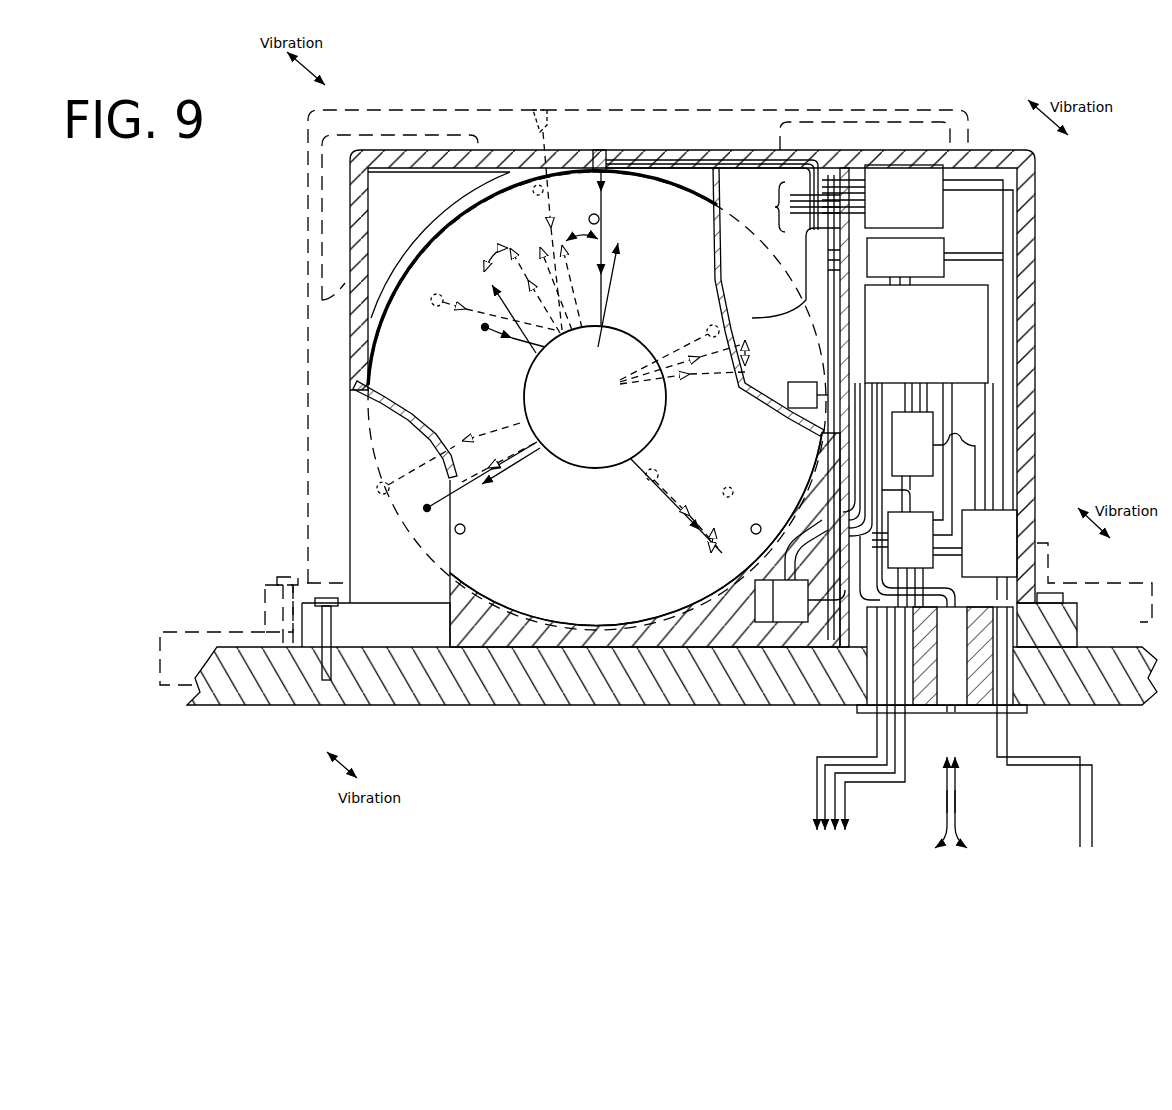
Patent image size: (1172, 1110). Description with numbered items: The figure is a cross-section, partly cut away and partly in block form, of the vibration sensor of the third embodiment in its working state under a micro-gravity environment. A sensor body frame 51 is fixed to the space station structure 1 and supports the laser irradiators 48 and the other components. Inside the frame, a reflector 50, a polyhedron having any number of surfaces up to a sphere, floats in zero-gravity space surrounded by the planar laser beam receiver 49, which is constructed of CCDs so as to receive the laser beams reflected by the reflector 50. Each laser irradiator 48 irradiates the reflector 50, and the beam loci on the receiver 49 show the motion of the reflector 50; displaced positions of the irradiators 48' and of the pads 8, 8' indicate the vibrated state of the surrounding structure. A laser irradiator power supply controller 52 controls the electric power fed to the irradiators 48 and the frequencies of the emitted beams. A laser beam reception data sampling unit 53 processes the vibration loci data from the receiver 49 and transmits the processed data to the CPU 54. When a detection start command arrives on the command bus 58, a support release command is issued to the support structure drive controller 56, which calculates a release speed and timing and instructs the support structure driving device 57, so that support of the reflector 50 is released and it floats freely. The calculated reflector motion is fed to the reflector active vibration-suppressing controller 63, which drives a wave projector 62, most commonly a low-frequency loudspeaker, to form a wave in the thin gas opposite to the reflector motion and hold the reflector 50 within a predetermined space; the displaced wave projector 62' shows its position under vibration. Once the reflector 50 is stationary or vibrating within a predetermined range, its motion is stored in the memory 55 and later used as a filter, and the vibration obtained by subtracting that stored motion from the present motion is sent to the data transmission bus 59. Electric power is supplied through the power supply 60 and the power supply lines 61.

The space station structure 1 is at (258, 707).
The pad 8 is at (588, 350).
The displaced pad 8' is at (668, 465).
The laser irradiator 48 is at (500, 320).
The displaced sensor 48' is at (537, 303).
The laser beam receiver 49 is at (535, 568).
The reflector 50 is at (578, 470).
The sensor body frame 51 is at (1036, 375).
The laser irradiator power supply controller 52 is at (939, 337).
The laser beam reception data sampling unit 53 is at (925, 559).
The CPU 54 is at (926, 348).
The memory 55 is at (912, 462).
The support structure drive controller 56 is at (800, 571).
The support structure driving device 57 is at (802, 395).
The command bus 58 is at (978, 852).
The data transmission bus 59 is at (860, 852).
The power supply 60 is at (989, 555).
The power supply lines 61 is at (1102, 852).
The wave projector 62 is at (614, 381).
The displaced sensor 62' is at (653, 339).
The reflector active vibration-suppressing controller 63 is at (935, 261).